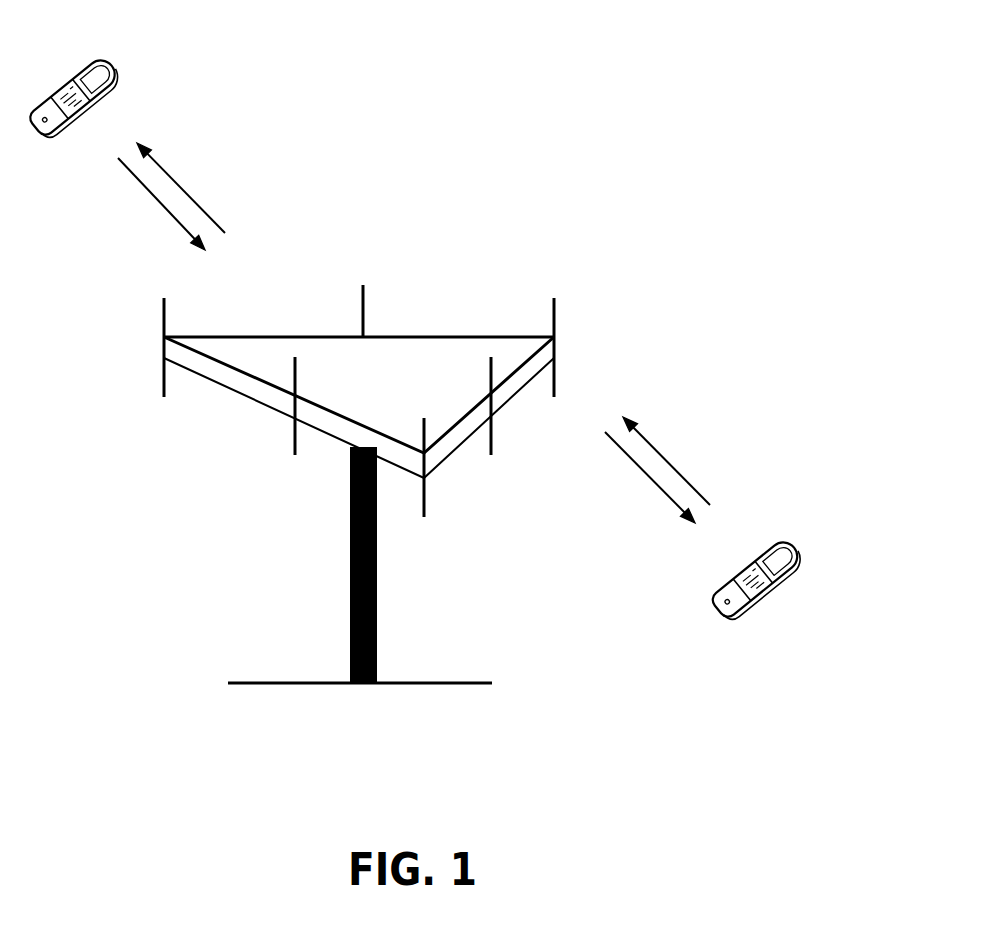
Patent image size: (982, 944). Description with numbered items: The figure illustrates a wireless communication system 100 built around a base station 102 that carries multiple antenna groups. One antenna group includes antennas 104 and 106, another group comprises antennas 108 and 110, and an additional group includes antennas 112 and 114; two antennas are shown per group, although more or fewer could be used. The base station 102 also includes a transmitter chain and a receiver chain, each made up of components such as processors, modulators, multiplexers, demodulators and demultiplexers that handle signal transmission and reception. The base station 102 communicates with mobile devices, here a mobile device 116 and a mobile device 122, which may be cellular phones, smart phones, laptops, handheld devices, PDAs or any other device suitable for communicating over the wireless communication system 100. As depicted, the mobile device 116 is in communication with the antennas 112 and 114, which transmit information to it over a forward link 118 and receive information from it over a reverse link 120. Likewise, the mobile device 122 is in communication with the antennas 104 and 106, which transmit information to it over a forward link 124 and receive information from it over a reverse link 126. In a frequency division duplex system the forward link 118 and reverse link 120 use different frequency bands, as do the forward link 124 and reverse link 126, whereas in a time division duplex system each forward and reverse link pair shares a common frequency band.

The wireless communication system 100 is at (866, 97).
The base station 102 is at (377, 683).
The antenna 104 is at (554, 298).
The antenna 106 is at (491, 432).
The antenna 108 is at (424, 495).
The antenna 110 is at (295, 455).
The antenna 112 is at (164, 298).
The antenna 114 is at (363, 297).
The mobile device 116 is at (83, 49).
The forward link 118 is at (183, 187).
The reverse link 120 is at (172, 220).
The mobile device 122 is at (765, 533).
The forward link 124 is at (653, 488).
The reverse link 126 is at (662, 452).